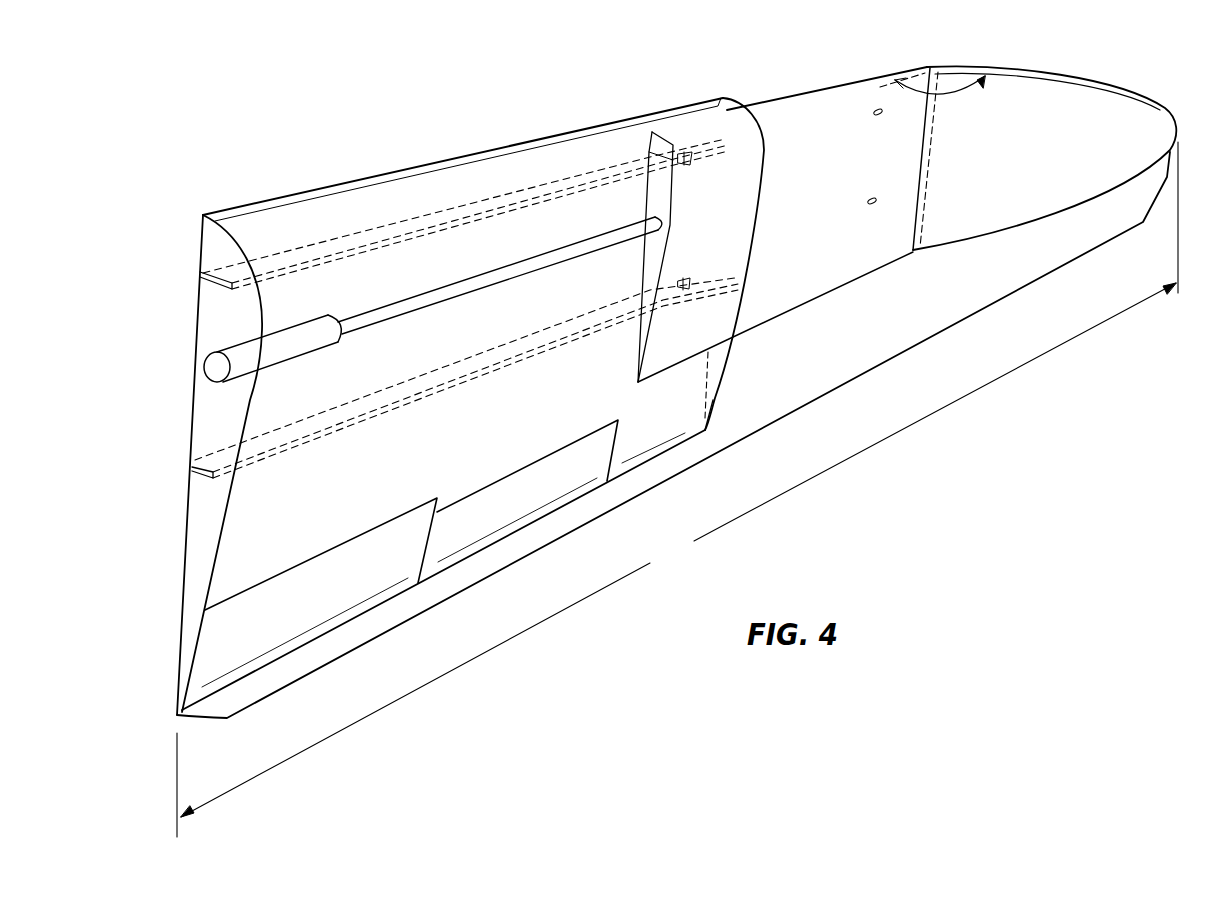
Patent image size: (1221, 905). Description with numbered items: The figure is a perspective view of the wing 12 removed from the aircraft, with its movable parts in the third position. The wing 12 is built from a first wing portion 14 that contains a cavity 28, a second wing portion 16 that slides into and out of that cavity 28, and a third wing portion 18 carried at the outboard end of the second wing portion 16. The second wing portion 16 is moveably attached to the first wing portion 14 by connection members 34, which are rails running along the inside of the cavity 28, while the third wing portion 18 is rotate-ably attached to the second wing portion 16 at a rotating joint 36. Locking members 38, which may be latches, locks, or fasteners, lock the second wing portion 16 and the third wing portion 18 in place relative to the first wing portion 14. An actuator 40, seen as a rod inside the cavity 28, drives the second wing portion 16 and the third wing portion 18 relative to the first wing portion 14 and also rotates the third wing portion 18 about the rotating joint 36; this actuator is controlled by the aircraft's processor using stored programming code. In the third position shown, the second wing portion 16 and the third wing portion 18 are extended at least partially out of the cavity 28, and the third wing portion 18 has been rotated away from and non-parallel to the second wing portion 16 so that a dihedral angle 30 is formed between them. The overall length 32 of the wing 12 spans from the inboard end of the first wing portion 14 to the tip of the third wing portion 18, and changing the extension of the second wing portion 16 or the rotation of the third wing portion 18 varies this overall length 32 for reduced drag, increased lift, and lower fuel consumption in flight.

The wing 12 is at (731, 446).
The first wing portion 14 is at (330, 186).
The second wing portion 16 is at (772, 108).
The third wing portion 18 is at (1066, 105).
The cavity 28 is at (597, 216).
The dihedral angle 30 is at (948, 94).
The overall length 32 is at (677, 489).
The connection members 34 is at (297, 250).
The rotating joint 36 is at (925, 182).
The locking members 38 is at (686, 152).
The actuator 40 is at (397, 318).